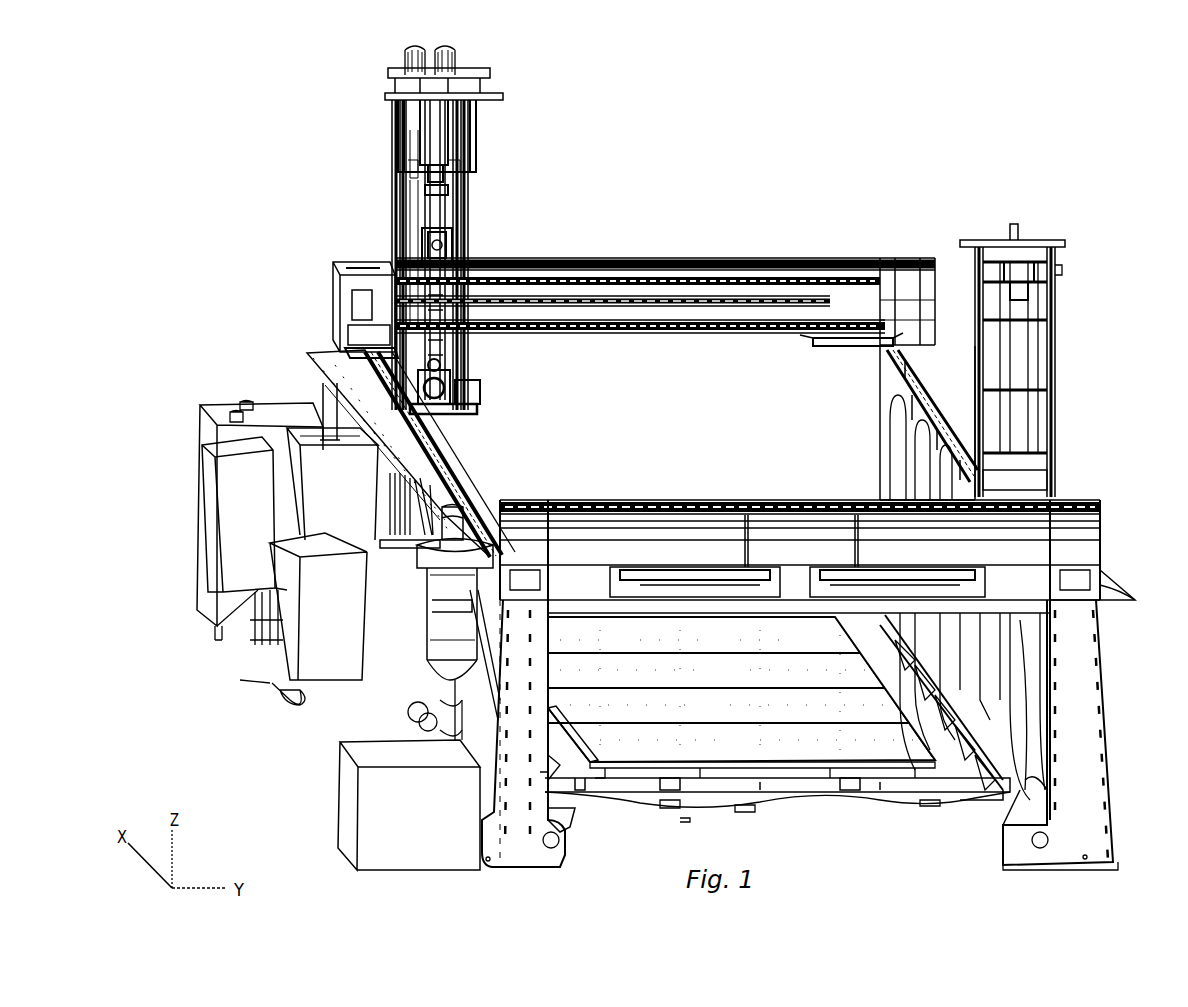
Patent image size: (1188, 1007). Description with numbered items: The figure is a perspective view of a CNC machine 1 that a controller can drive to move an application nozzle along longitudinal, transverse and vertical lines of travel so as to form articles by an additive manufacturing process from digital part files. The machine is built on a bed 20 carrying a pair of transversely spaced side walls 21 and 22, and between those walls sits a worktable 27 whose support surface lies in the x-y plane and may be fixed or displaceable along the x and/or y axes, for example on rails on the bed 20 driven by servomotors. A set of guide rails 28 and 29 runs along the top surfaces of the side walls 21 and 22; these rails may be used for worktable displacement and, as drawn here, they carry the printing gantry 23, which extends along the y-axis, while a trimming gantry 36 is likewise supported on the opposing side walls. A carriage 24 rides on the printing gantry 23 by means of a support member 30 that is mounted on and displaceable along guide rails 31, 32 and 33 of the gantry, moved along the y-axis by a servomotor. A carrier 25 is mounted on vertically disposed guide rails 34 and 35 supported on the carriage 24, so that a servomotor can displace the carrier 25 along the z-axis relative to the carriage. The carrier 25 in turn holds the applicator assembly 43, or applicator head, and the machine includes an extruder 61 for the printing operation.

The CNC machine 1 is at (1058, 155).
The bed 20 is at (693, 790).
The side wall 21 is at (535, 712).
The side wall 22 is at (1098, 737).
The printing gantry 23 is at (880, 262).
The carriage 24 is at (379, 221).
The carrier 25 is at (491, 159).
The worktable 27 is at (710, 697).
The guide rail 28 is at (470, 482).
The guide rail 29 is at (905, 372).
The support member 30 is at (378, 252).
The guide rail 31 is at (740, 262).
The guide rail 32 is at (668, 262).
The guide rail 33 is at (700, 333).
The guide rail 34 is at (350, 363).
The guide rail 35 is at (457, 340).
The trimming gantry 36 is at (1068, 487).
The applicator assembly 43 is at (460, 421).
The extruder 61 is at (449, 242).